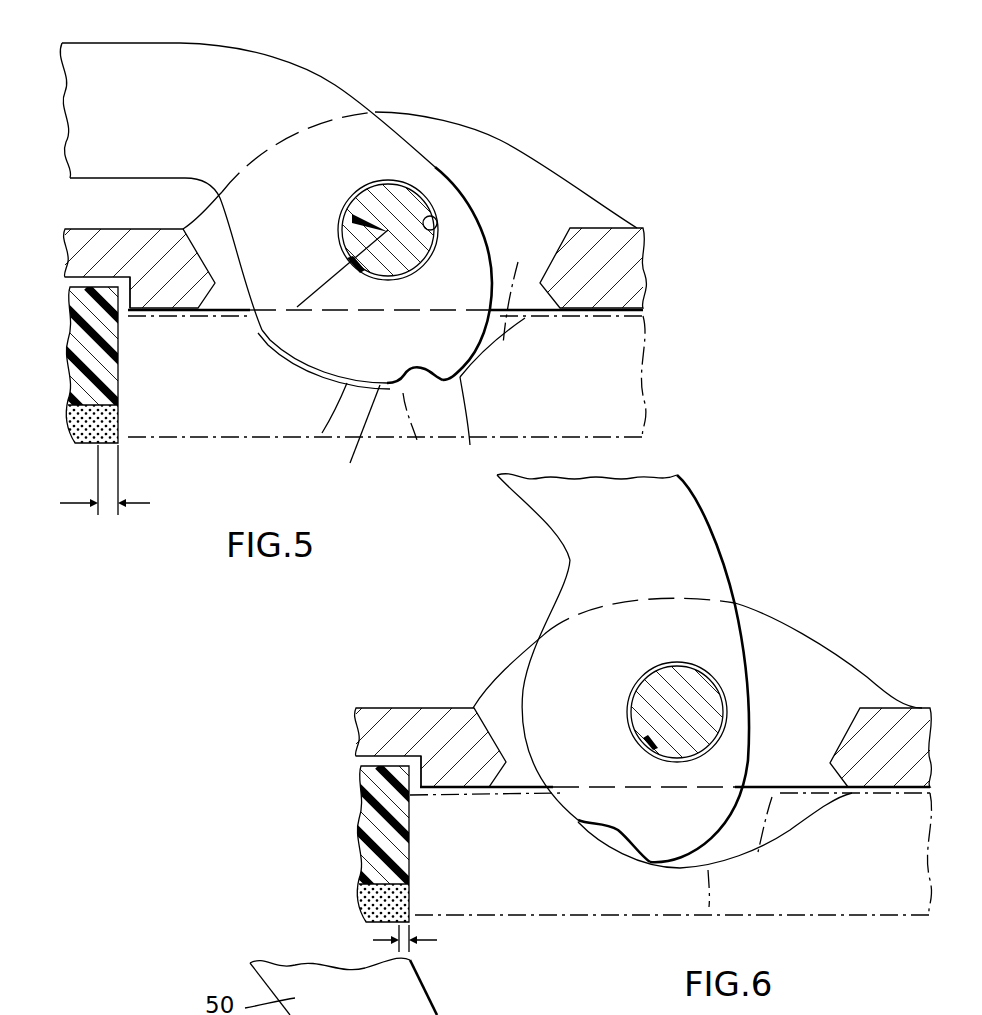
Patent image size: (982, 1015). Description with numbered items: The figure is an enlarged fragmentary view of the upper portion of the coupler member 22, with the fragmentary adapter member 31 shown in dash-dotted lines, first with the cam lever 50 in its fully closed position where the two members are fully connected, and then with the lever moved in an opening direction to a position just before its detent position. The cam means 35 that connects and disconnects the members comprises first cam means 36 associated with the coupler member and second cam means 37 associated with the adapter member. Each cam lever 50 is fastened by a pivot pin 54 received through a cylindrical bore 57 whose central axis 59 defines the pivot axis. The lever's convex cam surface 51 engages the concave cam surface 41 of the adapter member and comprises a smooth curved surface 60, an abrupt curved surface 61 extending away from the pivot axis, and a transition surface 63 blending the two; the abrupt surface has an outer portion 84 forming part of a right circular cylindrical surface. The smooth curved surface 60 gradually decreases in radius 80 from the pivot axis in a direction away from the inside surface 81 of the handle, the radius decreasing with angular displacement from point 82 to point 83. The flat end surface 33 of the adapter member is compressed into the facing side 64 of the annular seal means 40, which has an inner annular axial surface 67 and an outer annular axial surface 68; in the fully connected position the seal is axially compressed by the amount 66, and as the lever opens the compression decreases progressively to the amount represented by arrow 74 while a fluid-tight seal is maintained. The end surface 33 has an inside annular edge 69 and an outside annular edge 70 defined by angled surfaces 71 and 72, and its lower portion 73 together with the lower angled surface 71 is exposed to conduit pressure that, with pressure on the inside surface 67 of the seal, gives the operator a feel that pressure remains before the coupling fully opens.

In FIG. 5, the coupler member 22 is at (100, 232).
In FIG. 6, the coupler member 22 is at (378, 712).
In FIG. 5, the adapter member 31 is at (655, 372).
In FIG. 6, the adapter member 31 is at (868, 900).
In FIG. 5, the second sealing surface 33 is at (76, 388).
In FIG. 6, the second sealing surface 33 is at (358, 858).
In FIG. 5, the cam means 35 is at (535, 127).
In FIG. 6, the cam means 35 is at (831, 586).
In FIG. 5, the first cam means 36 is at (327, 353).
In FIG. 6, the first cam means 36 is at (562, 667).
In FIG. 5, the second cam means 37 is at (417, 440).
In FIG. 6, the second cam means 37 is at (709, 907).
In FIG. 5, the seal means 40 is at (82, 340).
In FIG. 6, the seal means 40 is at (360, 822).
In FIG. 5, the concave cam surface 41 is at (514, 273).
In FIG. 6, the concave cam surface 41 is at (771, 801).
In FIG. 5, the cam lever 50 is at (265, 78).
In FIG. 6, the cam lever 50 is at (560, 512).
In FIG. 5, the convex cam surface 51 is at (230, 318).
In FIG. 6, the convex cam surface 51 is at (523, 700).
In FIG. 5, the pivot pin 54 is at (398, 190).
In FIG. 6, the pivot pin 54 is at (708, 700).
In FIG. 5, the cylindrical bore 57 is at (437, 218).
In FIG. 5, the central axis 59 is at (352, 218).
In FIG. 5, the smooth curved surface 60 is at (322, 433).
In FIG. 6, the smooth curved surface 60 is at (542, 786).
In FIG. 5, the abrupt curved surface 61 is at (460, 378).
In FIG. 6, the abrupt curved surface 61 is at (643, 860).
In FIG. 5, the transition surface 63 is at (413, 367).
In FIG. 6, the transition surface 63 is at (622, 832).
In FIG. 5, the facing side 64 is at (130, 278).
In FIG. 6, the facing side 64 is at (422, 755).
In FIG. 5, the amount of axial compression 66 is at (75, 503).
In FIG. 5, the inner annular axial surface 67 is at (85, 410).
In FIG. 6, the inner annular axial surface 67 is at (368, 893).
In FIG. 5, the outer annular axial surface 68 is at (78, 265).
In FIG. 6, the outer annular axial surface 68 is at (355, 738).
In FIG. 5, the inside annular edge 69 is at (86, 432).
In FIG. 6, the inside annular edge 69 is at (382, 912).
In FIG. 5, the outside annular edge 70 is at (70, 300).
In FIG. 6, the outside annular edge 70 is at (358, 782).
In FIG. 5, the angled surface 71 is at (125, 438).
In FIG. 6, the angled surface 71 is at (422, 916).
In FIG. 5, the angled surface 72 is at (152, 300).
In FIG. 6, the angled surface 72 is at (448, 780).
In FIG. 5, the lower portion of the flat end surface 73 is at (88, 424).
In FIG. 6, the lower portion of the flat end surface 73 is at (372, 898).
In FIG. 6, the arrow 74 is at (427, 941).
In FIG. 5, the radius 80 is at (342, 275).
In FIG. 5, the inside surface of the handle 81 is at (105, 180).
In FIG. 5, the point 82 is at (267, 343).
In FIG. 5, the point 83 is at (346, 432).
In FIG. 5, the outer portion 84 is at (470, 445).